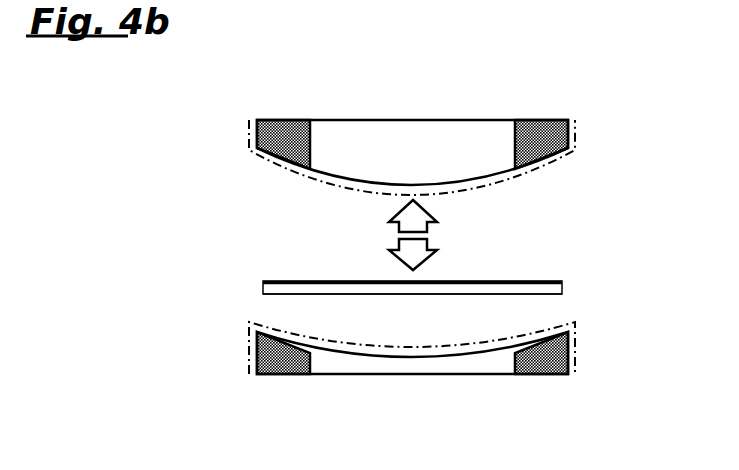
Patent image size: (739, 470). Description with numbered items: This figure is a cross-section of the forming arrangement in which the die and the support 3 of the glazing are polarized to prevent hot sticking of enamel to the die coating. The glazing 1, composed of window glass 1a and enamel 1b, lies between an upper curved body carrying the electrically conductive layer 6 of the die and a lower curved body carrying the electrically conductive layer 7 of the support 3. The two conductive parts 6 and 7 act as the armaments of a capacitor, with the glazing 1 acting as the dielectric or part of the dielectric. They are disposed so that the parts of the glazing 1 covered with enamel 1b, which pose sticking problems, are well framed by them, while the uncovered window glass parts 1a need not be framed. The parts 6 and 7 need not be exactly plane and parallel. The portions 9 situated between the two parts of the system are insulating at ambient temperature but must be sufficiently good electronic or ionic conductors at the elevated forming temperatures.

The glazing 1 is at (574, 279).
The window glass 1a is at (445, 296).
The enamel 1b is at (452, 281).
The support 3 is at (578, 130).
The electrically conductive layer of the die 6 is at (284, 130).
The electrically conductive layer of the support 7 is at (283, 365).
The insulating portions 9 is at (278, 160).